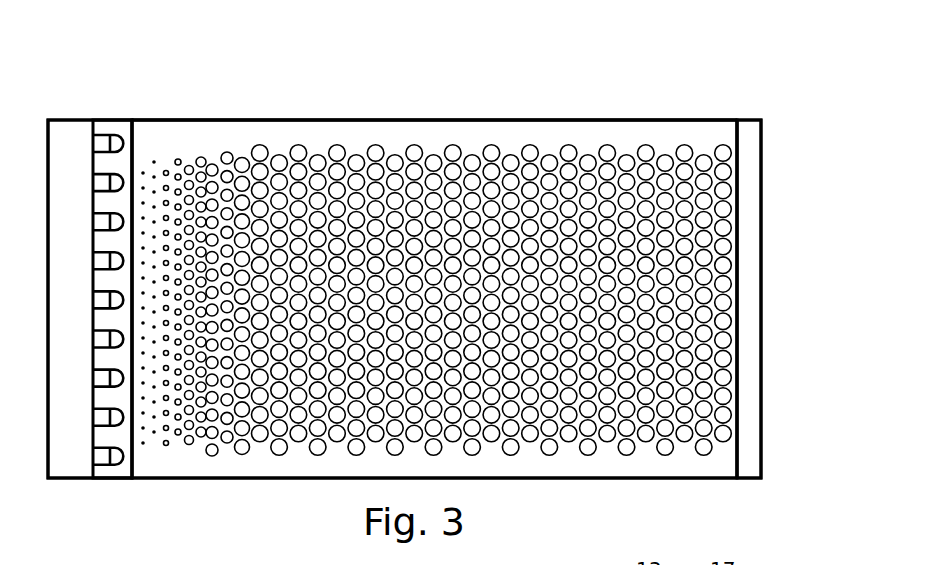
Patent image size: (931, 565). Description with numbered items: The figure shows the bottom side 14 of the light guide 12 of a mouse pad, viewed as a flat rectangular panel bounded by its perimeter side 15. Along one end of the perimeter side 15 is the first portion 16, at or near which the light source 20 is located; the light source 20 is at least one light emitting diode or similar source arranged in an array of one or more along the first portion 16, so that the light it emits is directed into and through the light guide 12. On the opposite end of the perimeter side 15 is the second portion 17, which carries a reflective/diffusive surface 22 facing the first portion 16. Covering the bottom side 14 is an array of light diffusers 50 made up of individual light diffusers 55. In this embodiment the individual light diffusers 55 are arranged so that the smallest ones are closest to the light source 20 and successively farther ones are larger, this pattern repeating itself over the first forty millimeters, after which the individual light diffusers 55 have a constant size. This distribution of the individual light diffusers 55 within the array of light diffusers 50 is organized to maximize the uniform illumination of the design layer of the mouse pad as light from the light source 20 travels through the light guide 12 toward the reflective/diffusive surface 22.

The light guide 12 is at (788, 323).
The bottom side 14 is at (398, 138).
The perimeter side 15 is at (247, 120).
The first portion 16 is at (133, 120).
The second portion 17 is at (736, 120).
The light source 20 is at (77, 512).
The reflective/diffusive surface 22 is at (763, 120).
The array of light diffusers 50 is at (580, 192).
The individual light diffusers 55 is at (242, 455).